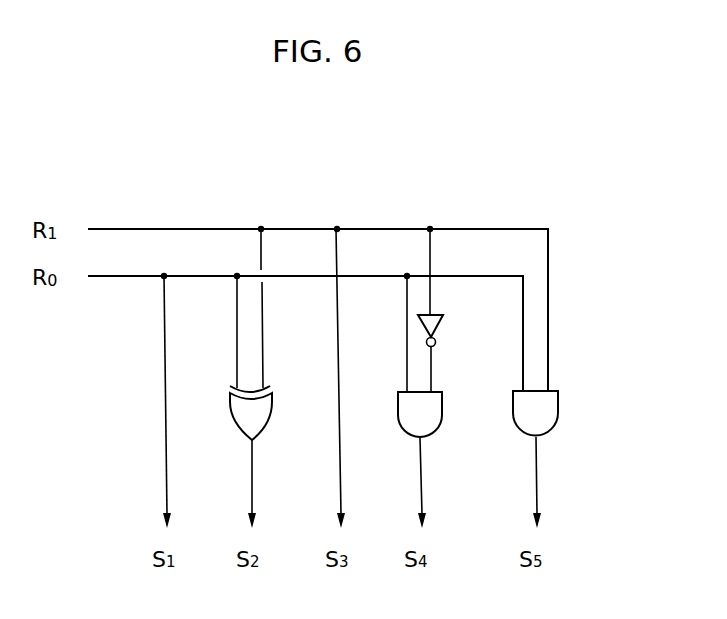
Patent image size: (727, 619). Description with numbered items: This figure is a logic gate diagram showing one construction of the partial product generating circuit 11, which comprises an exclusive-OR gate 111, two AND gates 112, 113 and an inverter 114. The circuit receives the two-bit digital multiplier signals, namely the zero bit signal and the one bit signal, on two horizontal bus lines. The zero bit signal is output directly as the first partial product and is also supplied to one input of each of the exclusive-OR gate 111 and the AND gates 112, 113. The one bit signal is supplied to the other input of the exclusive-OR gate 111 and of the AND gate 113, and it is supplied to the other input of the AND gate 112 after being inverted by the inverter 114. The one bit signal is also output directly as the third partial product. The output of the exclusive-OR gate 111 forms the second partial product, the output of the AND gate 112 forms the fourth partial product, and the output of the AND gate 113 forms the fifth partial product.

The partial product generating circuit 11 is at (563, 252).
The exclusive-OR gate 111 is at (255, 423).
The AND gate 112 is at (425, 422).
The AND gate 113 is at (543, 420).
The inverter 114 is at (444, 322).